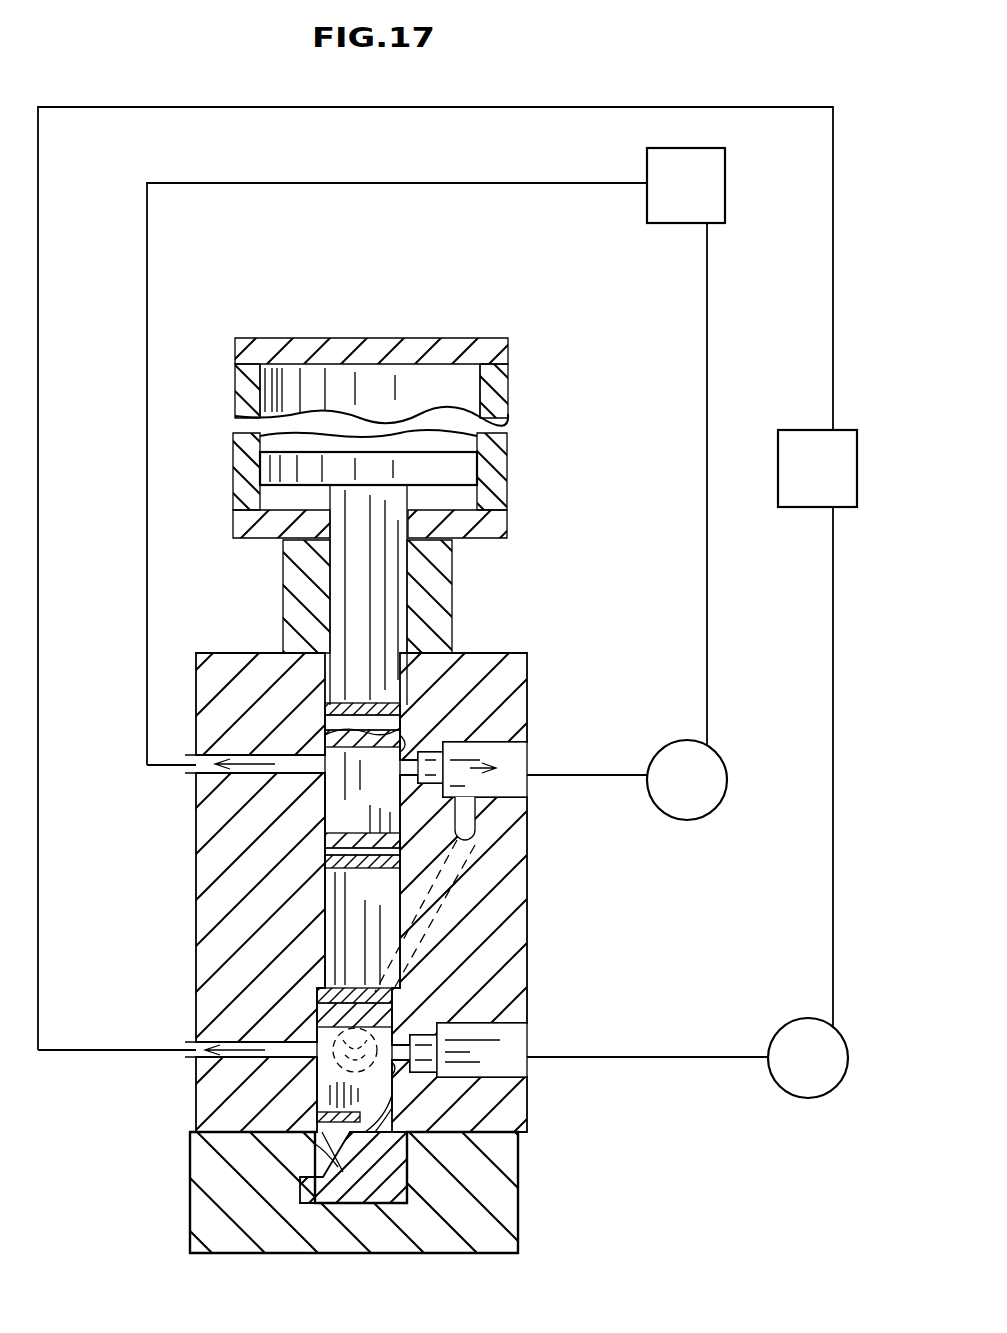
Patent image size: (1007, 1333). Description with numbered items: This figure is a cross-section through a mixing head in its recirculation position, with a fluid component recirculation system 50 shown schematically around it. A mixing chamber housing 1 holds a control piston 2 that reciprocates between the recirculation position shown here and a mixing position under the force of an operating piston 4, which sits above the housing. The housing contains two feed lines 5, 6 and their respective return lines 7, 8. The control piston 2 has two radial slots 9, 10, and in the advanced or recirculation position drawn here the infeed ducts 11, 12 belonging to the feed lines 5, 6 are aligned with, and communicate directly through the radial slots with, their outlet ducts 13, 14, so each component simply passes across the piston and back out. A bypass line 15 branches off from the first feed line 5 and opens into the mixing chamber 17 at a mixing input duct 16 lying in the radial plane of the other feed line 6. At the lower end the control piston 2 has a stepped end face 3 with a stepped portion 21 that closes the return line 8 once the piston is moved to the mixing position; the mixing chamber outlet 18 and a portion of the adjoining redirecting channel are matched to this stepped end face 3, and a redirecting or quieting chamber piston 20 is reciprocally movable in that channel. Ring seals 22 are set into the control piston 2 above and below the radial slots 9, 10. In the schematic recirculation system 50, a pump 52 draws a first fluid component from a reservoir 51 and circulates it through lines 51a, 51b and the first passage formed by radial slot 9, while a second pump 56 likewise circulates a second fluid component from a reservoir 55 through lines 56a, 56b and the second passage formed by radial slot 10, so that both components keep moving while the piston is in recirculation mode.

The mixing chamber housing 1 is at (205, 913).
The control piston 2 is at (400, 578).
The stepped end face 3 is at (335, 1170).
The operating piston 4 is at (458, 468).
The feed line 5 is at (515, 757).
The feed line 6 is at (524, 1072).
The return line 7 is at (205, 773).
The return line 8 is at (200, 1062).
The radial slot 9 is at (332, 813).
The radial slot 10 is at (320, 1082).
The infeed duct 11 is at (402, 735).
The infeed duct 12 is at (388, 1066).
The outlet duct 13 is at (325, 742).
The outlet duct 14 is at (318, 1012).
The bypass line 15 is at (480, 825).
The mixing input duct 16 is at (322, 995).
The mixing chamber 17 is at (396, 1112).
The mixing chamber outlet 18 is at (408, 1152).
The redirecting piston 20 is at (395, 1188).
The stepped portion 21 is at (317, 1118).
The ring seals 22 is at (402, 710).
The fluid component recirculation system 50 is at (676, 1160).
The reservoir 51 is at (655, 223).
The line 51a is at (602, 775).
The line 51b is at (147, 775).
The pump 52 is at (725, 762).
The reservoir 55 is at (805, 490).
The pump 56 is at (783, 1028).
The line 56a is at (540, 1057).
The line 56b is at (152, 1050).